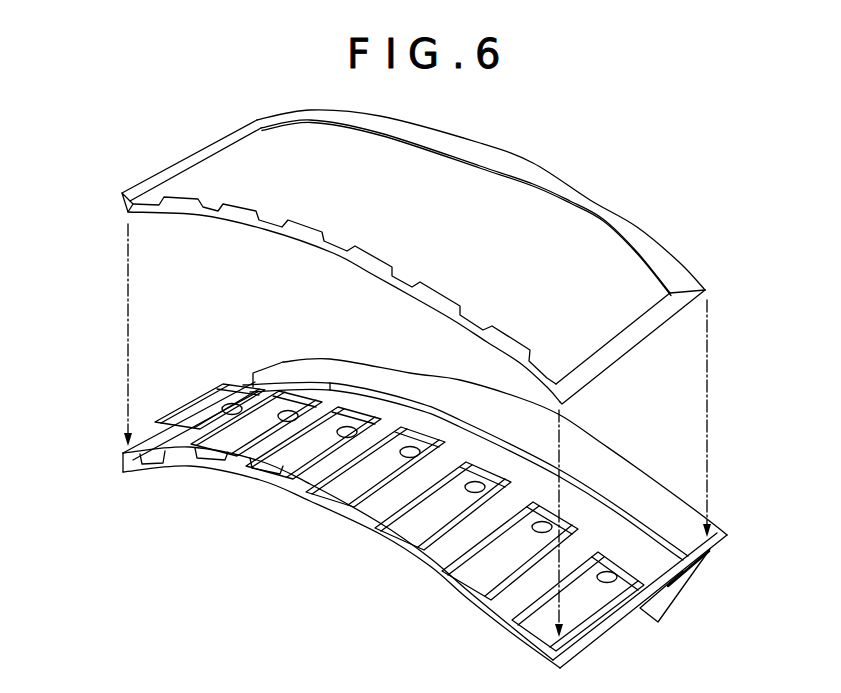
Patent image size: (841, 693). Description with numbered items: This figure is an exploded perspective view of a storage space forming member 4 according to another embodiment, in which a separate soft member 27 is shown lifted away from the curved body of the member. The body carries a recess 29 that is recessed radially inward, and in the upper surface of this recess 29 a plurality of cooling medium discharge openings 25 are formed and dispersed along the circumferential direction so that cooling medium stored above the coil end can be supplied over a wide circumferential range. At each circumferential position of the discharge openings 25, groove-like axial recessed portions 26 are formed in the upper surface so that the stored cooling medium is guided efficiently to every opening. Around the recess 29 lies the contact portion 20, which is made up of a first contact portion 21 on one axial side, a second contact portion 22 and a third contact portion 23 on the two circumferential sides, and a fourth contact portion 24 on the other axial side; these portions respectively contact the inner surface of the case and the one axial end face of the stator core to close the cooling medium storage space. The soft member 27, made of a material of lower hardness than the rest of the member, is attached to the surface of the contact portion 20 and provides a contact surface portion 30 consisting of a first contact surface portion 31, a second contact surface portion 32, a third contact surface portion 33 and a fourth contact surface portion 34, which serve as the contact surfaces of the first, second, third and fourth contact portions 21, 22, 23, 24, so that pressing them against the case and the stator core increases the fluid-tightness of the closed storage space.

The storage space forming member 4 is at (616, 186).
The contact portion 20 is at (449, 496).
The first contact portion 21 is at (582, 438).
The second contact portion 22 is at (158, 430).
The third contact portion 23 is at (663, 576).
The fourth contact portion 24 is at (297, 490).
The cooling medium discharge openings 25 is at (287, 414).
The axial recessed portions 26 is at (255, 466).
The soft member 27 is at (536, 162).
The recess 29 is at (337, 398).
The contact surface portion 30 is at (390, 254).
The first contact surface portion 31 is at (625, 233).
The second contact surface portion 32 is at (178, 160).
The third contact surface portion 33 is at (627, 337).
The fourth contact surface portion 34 is at (297, 232).